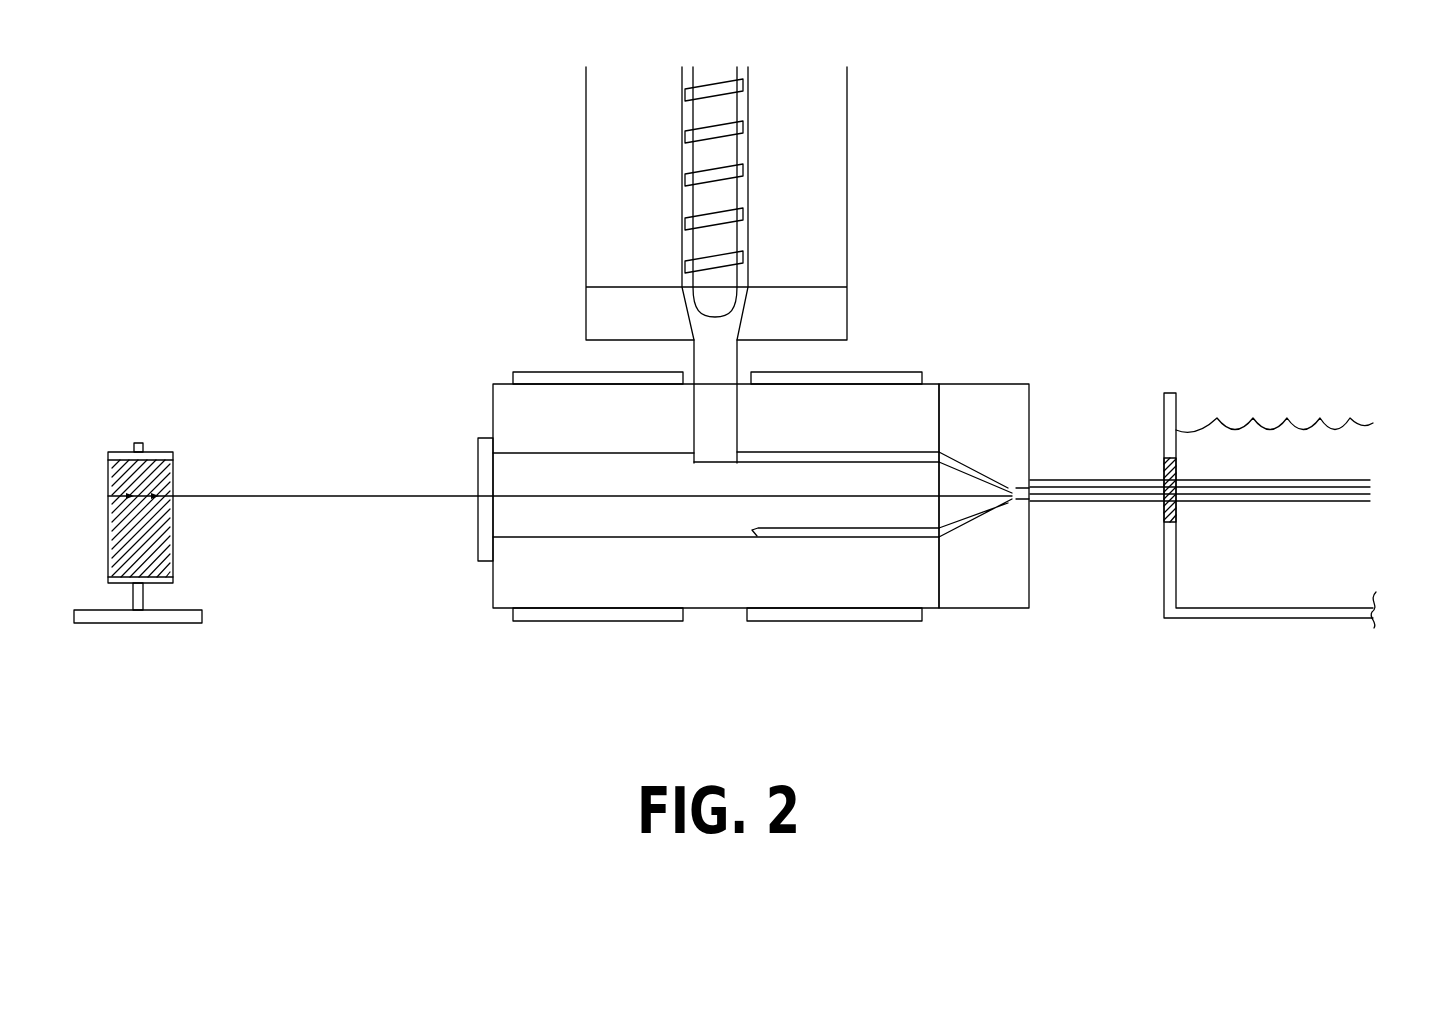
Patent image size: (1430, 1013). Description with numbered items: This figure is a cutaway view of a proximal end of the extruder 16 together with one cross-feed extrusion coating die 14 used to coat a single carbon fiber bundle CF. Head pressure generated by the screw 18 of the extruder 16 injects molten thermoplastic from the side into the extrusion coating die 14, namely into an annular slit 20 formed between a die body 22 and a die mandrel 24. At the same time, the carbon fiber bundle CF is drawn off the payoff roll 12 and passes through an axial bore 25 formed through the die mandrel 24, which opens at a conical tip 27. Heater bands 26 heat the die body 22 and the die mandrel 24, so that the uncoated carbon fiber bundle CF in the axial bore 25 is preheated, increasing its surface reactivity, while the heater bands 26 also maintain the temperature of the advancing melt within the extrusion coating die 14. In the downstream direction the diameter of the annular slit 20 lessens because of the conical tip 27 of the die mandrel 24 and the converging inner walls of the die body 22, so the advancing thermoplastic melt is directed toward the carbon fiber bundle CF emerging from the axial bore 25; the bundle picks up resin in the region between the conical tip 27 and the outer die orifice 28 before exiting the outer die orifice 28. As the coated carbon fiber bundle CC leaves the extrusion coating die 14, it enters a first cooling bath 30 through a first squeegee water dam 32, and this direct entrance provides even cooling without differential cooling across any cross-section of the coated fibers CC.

The payoff roll 12 is at (173, 478).
The extrusion coating die 14 is at (533, 665).
The extruder 16 is at (822, 133).
The screw 18 is at (693, 155).
The annular slit 20 is at (847, 532).
The die body 22 is at (977, 593).
The die mandrel 24 is at (838, 462).
The axial bore 25 is at (531, 497).
The heater bands 26 is at (513, 372).
The conical tip 27 is at (963, 473).
The outer die orifice 28 is at (1030, 480).
The first cooling bath 30 is at (1316, 388).
The first squeegee water dam 32 is at (1163, 520).
The carbon fiber bundle CF is at (397, 497).
The coated carbon fiber bundle CC is at (1092, 495).